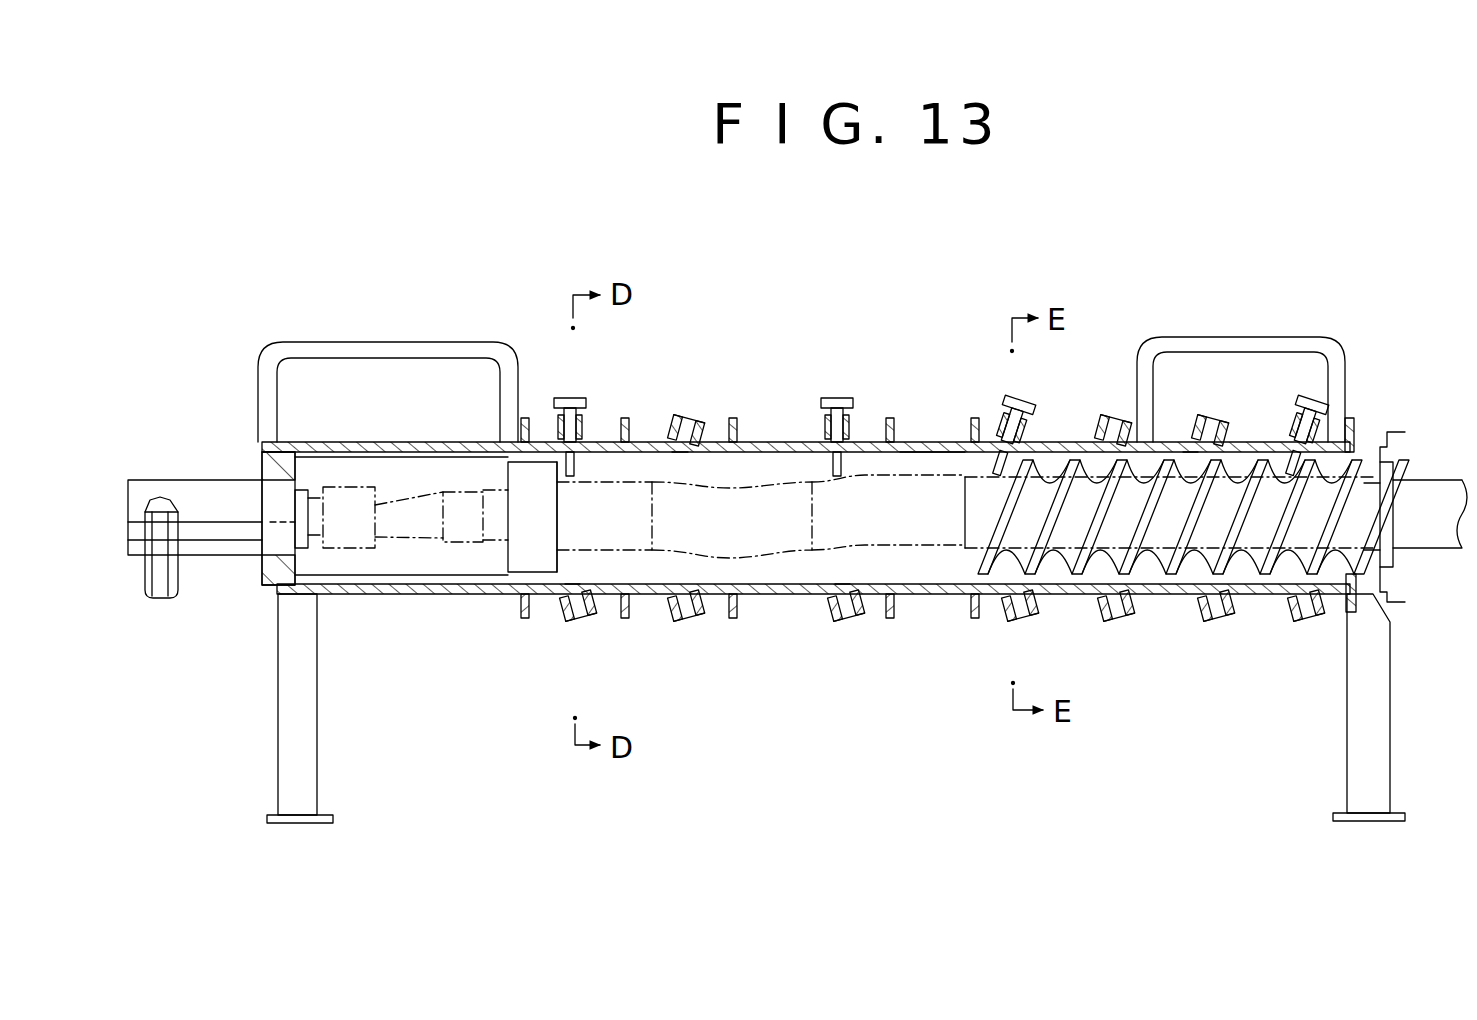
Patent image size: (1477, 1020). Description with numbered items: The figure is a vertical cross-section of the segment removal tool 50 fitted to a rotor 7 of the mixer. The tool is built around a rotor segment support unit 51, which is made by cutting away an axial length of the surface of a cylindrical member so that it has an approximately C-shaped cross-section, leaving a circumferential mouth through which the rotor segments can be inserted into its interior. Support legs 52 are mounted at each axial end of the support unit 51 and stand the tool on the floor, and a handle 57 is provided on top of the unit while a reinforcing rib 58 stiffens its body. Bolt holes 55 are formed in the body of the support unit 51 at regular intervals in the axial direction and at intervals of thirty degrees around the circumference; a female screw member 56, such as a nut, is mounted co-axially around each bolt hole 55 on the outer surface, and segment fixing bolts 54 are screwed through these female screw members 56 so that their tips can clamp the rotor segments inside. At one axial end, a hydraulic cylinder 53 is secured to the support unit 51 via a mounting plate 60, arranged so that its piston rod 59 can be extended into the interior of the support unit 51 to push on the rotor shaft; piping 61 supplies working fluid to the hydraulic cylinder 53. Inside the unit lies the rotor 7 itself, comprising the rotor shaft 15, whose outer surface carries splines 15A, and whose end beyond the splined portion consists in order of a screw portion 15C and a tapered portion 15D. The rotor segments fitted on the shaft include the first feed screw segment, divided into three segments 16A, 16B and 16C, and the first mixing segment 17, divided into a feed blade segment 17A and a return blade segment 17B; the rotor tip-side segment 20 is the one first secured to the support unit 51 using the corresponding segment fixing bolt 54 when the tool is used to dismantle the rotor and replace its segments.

The segment removal tool 50 is at (809, 448).
The support unit 51 is at (770, 442).
The rotor 7 is at (928, 465).
The handle 57 is at (398, 342).
The support leg 52 is at (305, 758).
The hydraulic cylinder 53 is at (190, 495).
The piping 61 is at (152, 573).
The mounting plate 60 is at (262, 470).
The piston rod 59 is at (300, 518).
The rotor shaft 15 is at (1415, 477).
The splines 15A is at (517, 482).
The screw portion 15C is at (470, 542).
The tapered portion 15D is at (402, 545).
The first feed screw segment portion 16A is at (1352, 535).
The first feed screw segment portion 16B is at (1158, 548).
The first feed screw segment portion 16C is at (955, 552).
The first mixing segment 17 is at (761, 613).
The feed blade segment 17A is at (895, 558).
The return blade segment 17B is at (722, 558).
The rotor segment 20 is at (638, 552).
The segment fixing bolt 54 is at (583, 397).
The bolt hole 55 is at (572, 583).
The female screw member 56 is at (686, 418).
The reinforcing rib 58 is at (628, 418).